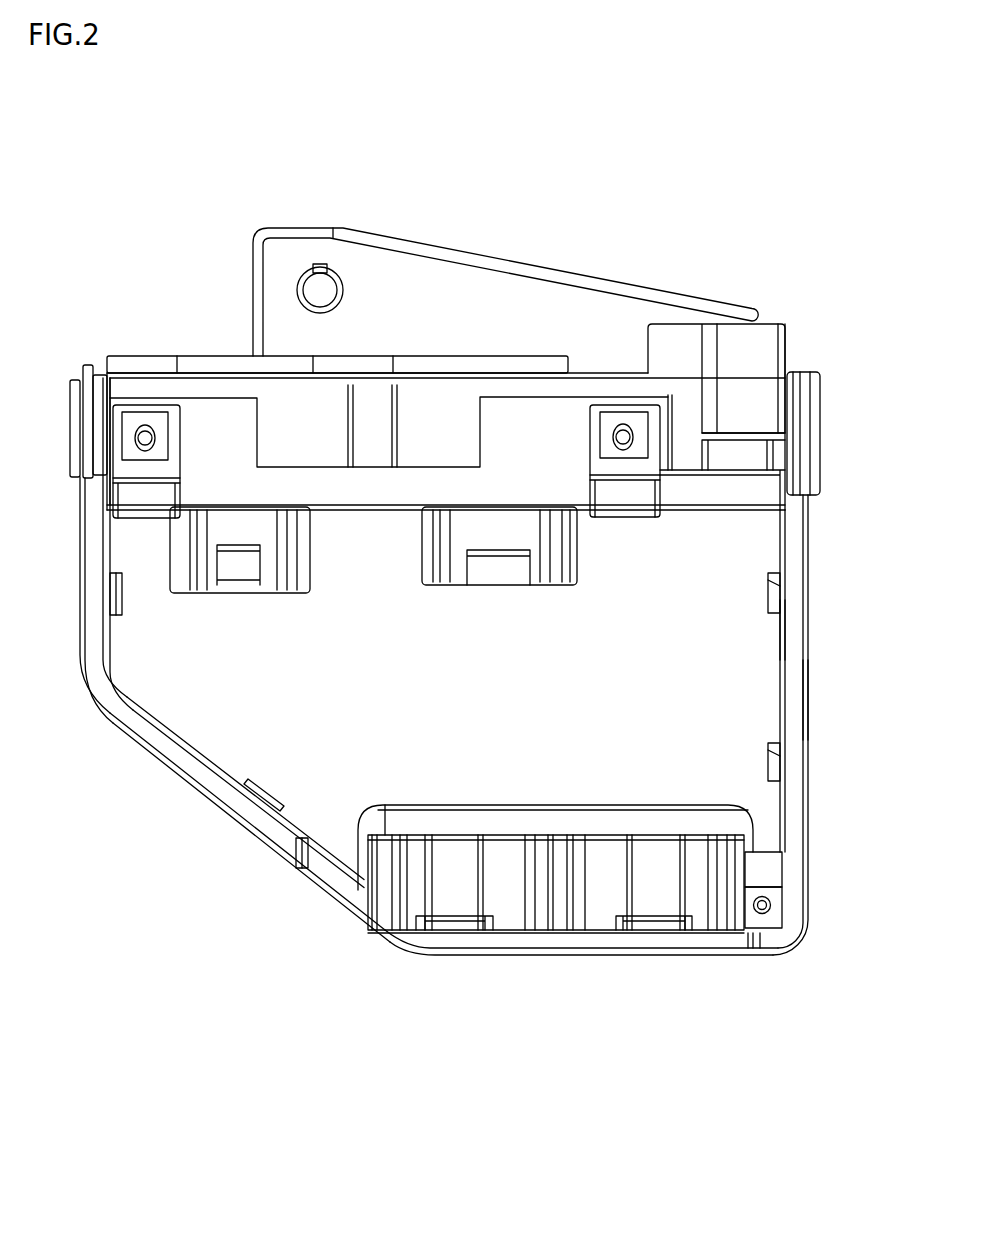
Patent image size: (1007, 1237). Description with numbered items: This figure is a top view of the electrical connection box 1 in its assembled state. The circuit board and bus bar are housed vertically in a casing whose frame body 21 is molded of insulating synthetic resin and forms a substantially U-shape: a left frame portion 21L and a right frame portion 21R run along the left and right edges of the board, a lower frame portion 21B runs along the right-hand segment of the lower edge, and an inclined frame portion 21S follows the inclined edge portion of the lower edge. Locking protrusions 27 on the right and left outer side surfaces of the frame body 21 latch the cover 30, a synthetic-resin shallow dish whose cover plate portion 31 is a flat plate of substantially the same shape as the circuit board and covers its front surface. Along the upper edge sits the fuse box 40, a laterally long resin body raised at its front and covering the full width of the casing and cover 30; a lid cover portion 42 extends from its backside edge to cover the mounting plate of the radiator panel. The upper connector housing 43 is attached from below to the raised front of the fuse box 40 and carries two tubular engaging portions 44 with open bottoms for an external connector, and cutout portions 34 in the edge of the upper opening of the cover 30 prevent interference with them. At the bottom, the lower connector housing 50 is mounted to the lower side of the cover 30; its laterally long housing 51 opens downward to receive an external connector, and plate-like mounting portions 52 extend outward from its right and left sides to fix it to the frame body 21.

The electrical connection box 1 is at (663, 130).
The frame body 21 is at (90, 622).
The left frame portion 21L is at (90, 557).
The right frame portion 21R is at (795, 548).
The inclined frame portion 21S is at (215, 787).
The lower frame portion 21B is at (677, 947).
The locking protrusion 27 is at (770, 765).
The cover 30 is at (742, 636).
The cover plate portion 31 is at (747, 700).
The cutout portion 34 is at (493, 592).
The fuse box 40 is at (617, 380).
The lid cover portion 42 is at (433, 268).
The upper connector housing 43 is at (523, 433).
The tubular engaging portion 44 is at (458, 538).
The lower connector housing 50 is at (413, 897).
The housing 51 is at (480, 927).
The mounting portion 52 is at (758, 917).